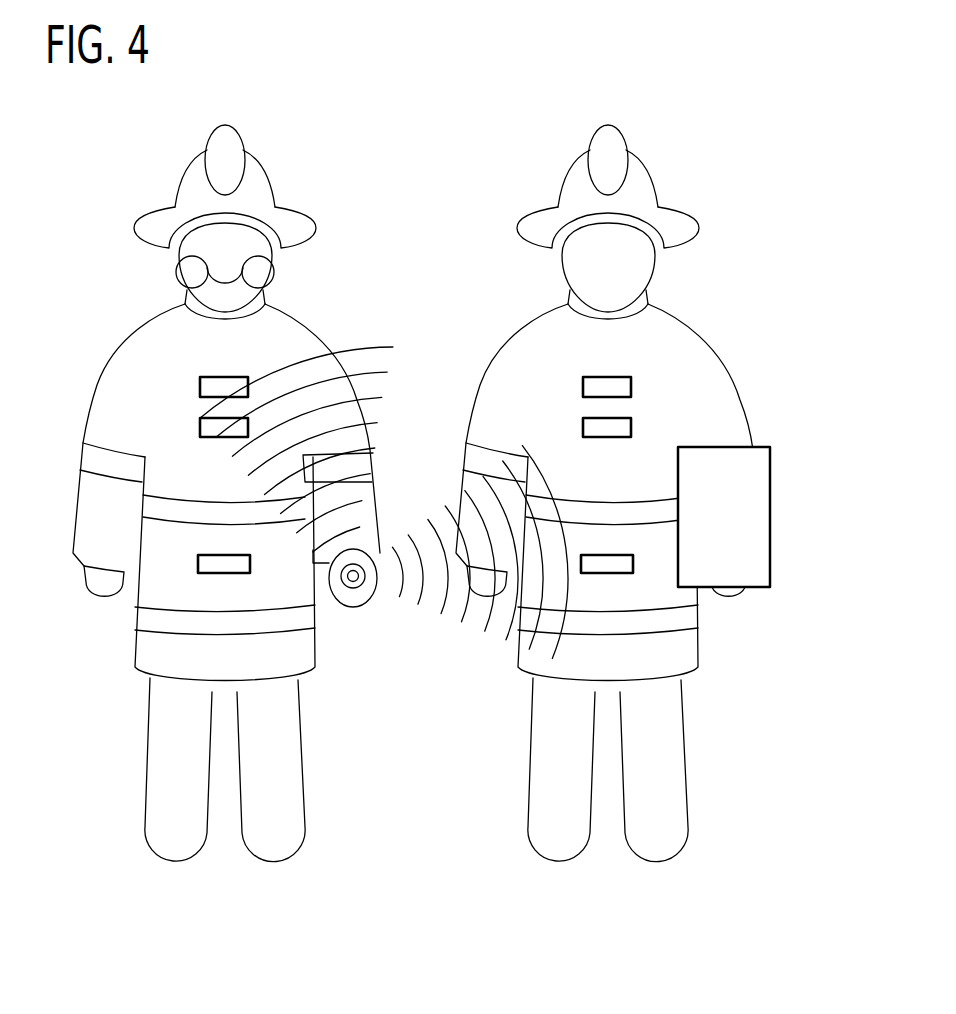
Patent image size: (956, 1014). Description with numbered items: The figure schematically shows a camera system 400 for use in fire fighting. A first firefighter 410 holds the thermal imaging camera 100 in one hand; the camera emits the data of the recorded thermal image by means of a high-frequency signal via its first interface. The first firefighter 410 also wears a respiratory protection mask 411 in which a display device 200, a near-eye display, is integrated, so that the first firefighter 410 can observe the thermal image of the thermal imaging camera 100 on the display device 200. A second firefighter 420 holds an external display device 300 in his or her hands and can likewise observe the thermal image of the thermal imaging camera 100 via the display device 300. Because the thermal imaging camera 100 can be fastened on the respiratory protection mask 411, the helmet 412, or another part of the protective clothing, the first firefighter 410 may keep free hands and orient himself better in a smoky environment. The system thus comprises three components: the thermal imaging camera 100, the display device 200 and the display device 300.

The camera system 400 is at (135, 903).
The first firefighter 410 is at (146, 175).
The respiratory protection mask 411 is at (167, 252).
The helmet 412 is at (267, 170).
The display device 200 is at (277, 275).
The thermal imaging camera 100 is at (353, 583).
The second firefighter 420 is at (692, 173).
The display device 300 is at (755, 515).